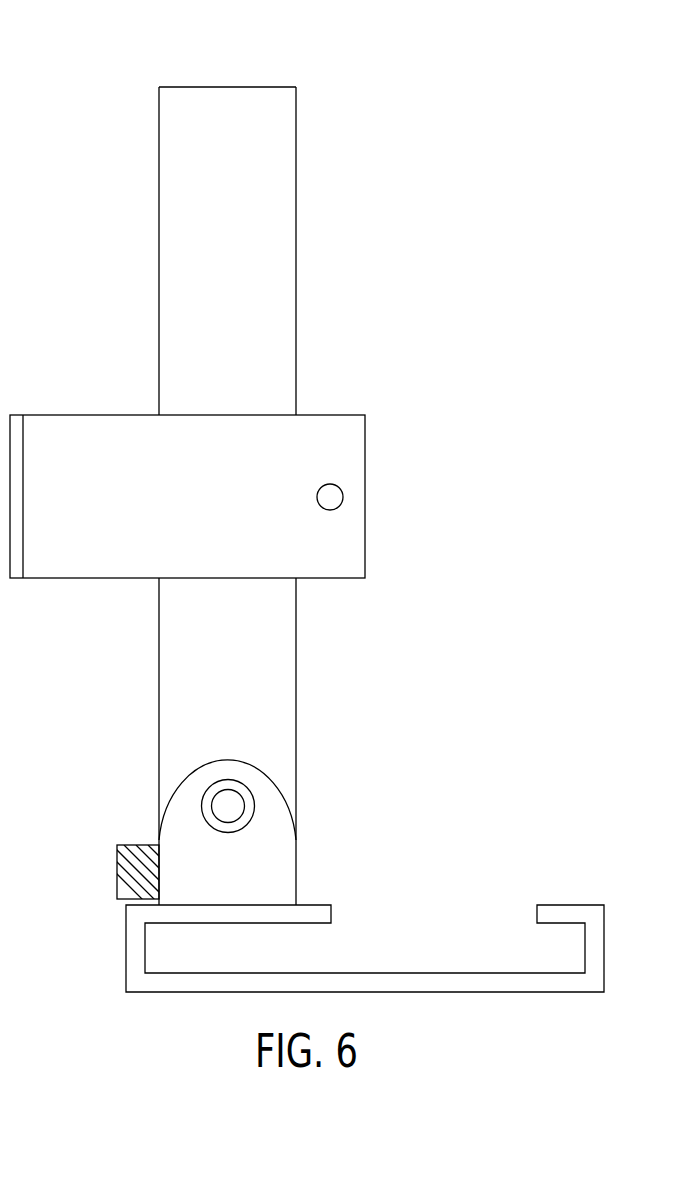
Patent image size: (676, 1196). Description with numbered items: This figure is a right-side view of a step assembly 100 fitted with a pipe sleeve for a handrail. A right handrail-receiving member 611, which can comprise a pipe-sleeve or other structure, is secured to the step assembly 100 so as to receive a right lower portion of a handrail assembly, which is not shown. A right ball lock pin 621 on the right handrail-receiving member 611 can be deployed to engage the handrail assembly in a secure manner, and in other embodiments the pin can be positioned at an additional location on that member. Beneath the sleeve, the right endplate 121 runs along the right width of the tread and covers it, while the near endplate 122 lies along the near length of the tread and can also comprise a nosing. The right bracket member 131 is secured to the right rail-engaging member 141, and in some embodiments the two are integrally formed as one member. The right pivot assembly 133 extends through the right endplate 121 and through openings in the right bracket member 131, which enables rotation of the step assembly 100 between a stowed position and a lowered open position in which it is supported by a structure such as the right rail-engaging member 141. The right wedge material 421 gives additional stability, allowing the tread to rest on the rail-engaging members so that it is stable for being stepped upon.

The step assembly 100 is at (510, 165).
The right endplate 121 is at (172, 240).
The near endplate 122 is at (226, 86).
The right bracket member 131 is at (171, 841).
The right pivot assembly 133 is at (252, 806).
The right rail-engaging member 141 is at (132, 948).
The right wedge material 421 is at (126, 877).
The right handrail-receiving member 611 is at (57, 420).
The right ball lock pin 621 is at (341, 495).